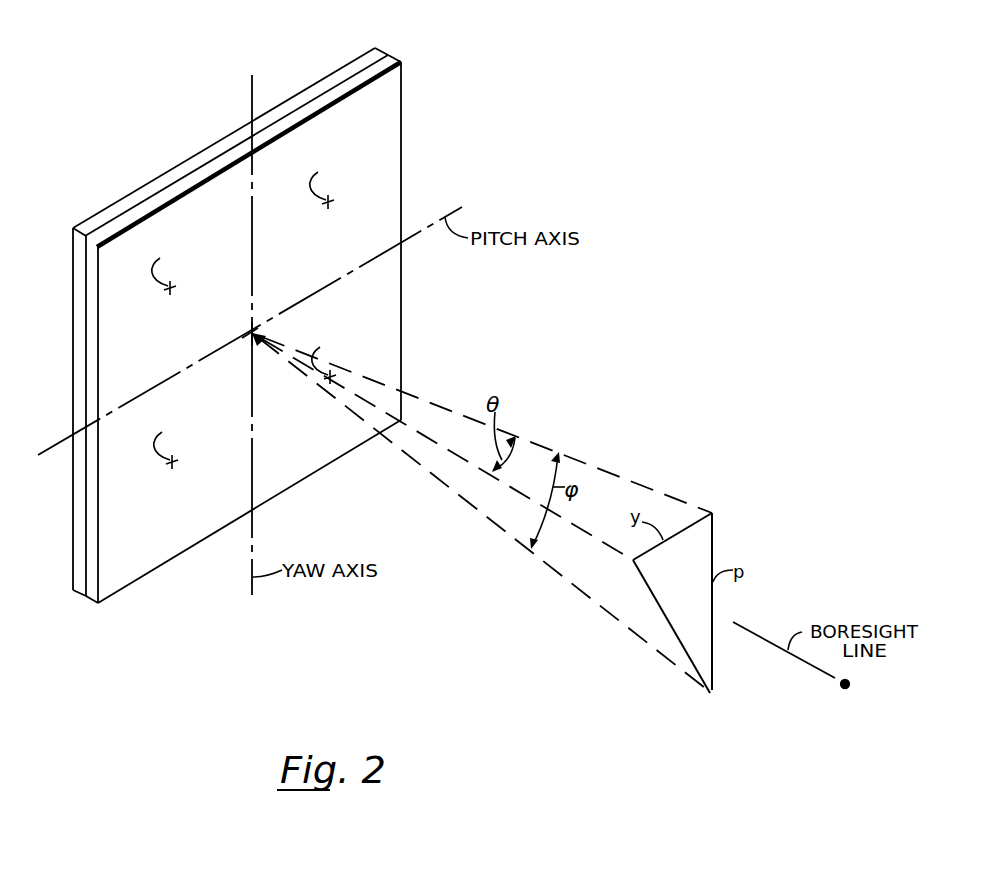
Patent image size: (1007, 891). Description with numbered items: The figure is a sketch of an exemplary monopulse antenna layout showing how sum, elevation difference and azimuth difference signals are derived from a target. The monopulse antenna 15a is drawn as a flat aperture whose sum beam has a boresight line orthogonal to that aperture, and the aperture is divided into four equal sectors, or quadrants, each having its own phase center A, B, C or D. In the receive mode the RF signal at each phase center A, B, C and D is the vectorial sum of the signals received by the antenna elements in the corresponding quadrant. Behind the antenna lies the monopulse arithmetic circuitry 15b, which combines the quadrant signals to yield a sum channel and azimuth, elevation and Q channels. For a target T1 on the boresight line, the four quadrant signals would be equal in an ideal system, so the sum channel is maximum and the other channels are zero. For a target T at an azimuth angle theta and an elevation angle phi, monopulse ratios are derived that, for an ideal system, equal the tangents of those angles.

The monopulse antenna 15a is at (387, 57).
The monopulse arithmetic circuitry 15b is at (162, 183).
The phase center A is at (165, 271).
The phase center B is at (325, 183).
The phase center C is at (329, 359).
The phase center D is at (168, 443).
The target T is at (712, 690).
The target on boresight T1 is at (847, 688).